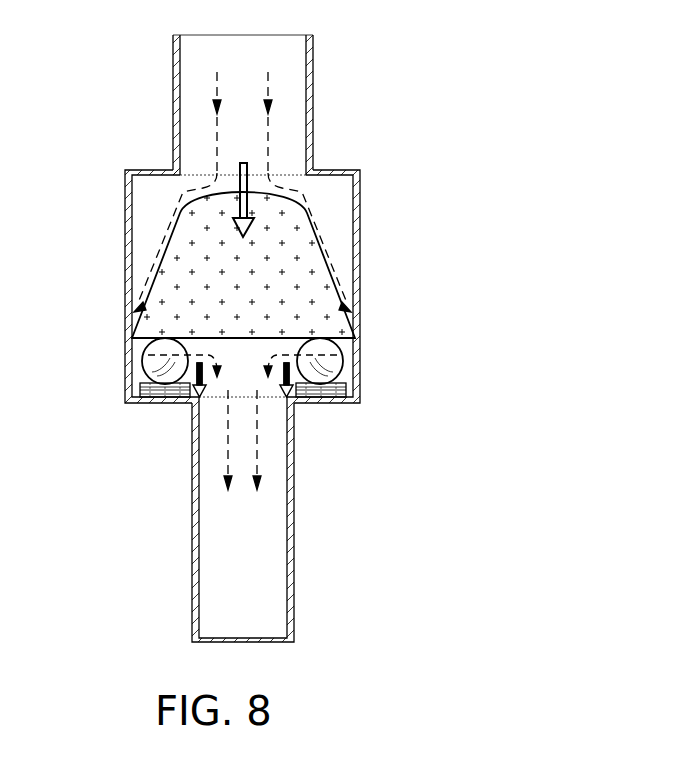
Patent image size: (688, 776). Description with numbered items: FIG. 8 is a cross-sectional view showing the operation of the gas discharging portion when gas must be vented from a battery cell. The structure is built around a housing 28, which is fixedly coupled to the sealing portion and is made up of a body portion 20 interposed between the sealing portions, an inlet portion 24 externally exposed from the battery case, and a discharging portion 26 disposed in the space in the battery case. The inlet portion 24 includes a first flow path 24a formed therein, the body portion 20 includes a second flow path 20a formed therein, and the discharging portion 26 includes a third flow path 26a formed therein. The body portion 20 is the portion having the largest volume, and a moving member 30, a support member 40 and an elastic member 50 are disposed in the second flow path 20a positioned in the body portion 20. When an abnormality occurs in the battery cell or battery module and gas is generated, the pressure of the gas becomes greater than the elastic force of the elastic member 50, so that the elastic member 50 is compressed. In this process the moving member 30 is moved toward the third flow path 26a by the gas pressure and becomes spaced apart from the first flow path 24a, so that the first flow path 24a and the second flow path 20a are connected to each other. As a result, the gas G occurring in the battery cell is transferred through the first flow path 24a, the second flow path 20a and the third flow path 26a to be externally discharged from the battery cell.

The body portion 20 is at (125, 272).
The second flow path 20a is at (250, 363).
The inlet portion 24 is at (173, 93).
The first flow path 24a is at (245, 82).
The discharging portion 26 is at (195, 560).
The third flow path 26a is at (245, 523).
The housing 28 is at (65, 78).
The moving member 30 is at (310, 277).
The support member 40 is at (337, 365).
The elastic member 50 is at (333, 392).
The gas G is at (270, 147).